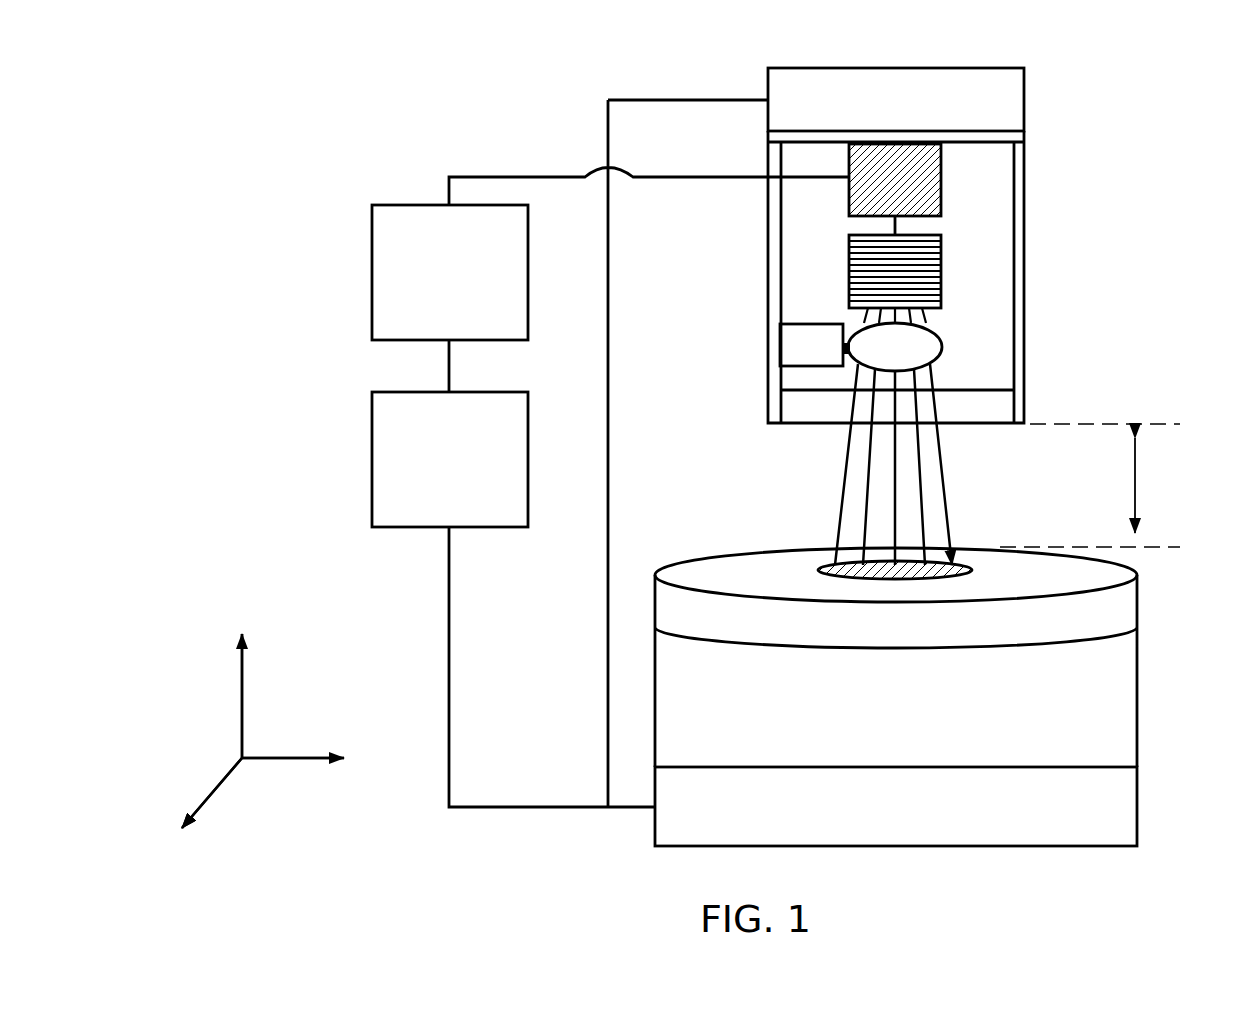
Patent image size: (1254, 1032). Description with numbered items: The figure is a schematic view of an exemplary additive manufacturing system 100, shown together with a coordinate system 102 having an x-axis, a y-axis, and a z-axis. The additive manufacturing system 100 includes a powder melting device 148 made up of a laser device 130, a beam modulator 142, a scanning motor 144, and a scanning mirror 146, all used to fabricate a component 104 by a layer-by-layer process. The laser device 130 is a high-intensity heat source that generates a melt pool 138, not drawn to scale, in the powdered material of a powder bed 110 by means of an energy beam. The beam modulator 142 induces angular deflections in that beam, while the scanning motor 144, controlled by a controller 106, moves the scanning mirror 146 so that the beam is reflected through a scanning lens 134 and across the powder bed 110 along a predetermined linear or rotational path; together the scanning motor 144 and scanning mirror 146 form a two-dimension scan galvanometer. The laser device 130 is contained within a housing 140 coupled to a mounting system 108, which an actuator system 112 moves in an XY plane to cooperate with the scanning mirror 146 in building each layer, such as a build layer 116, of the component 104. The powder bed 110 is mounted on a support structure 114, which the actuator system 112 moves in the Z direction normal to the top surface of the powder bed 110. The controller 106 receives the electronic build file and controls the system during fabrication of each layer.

The additive manufacturing system 100 is at (668, 66).
The coordinate system 102 is at (208, 725).
The component 104 is at (1138, 602).
The controller 106 is at (372, 278).
The mounting system 108 is at (1026, 104).
The powder bed 110 is at (1138, 680).
The actuator system 112 is at (372, 463).
The support structure 114 is at (1138, 800).
The build layer 116 is at (718, 577).
The laser device 130 is at (941, 177).
The scanning lens 134 is at (781, 410).
The melt pool 138 is at (963, 562).
The housing 140 is at (1015, 217).
The beam modulator 142 is at (941, 270).
The scanning motor 144 is at (789, 337).
The scanning mirror 146 is at (843, 353).
The powder melting device 148 is at (1128, 229).